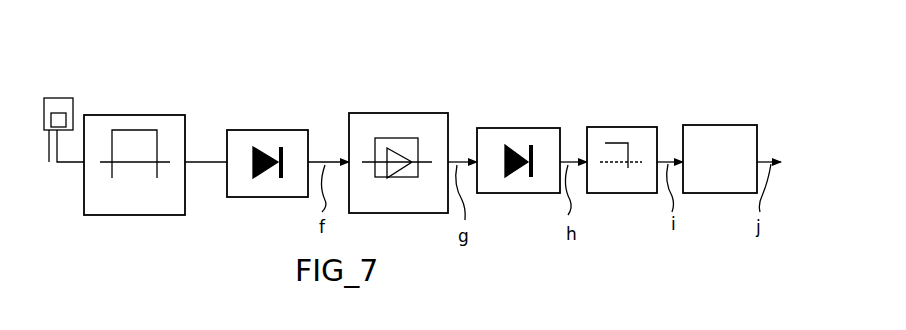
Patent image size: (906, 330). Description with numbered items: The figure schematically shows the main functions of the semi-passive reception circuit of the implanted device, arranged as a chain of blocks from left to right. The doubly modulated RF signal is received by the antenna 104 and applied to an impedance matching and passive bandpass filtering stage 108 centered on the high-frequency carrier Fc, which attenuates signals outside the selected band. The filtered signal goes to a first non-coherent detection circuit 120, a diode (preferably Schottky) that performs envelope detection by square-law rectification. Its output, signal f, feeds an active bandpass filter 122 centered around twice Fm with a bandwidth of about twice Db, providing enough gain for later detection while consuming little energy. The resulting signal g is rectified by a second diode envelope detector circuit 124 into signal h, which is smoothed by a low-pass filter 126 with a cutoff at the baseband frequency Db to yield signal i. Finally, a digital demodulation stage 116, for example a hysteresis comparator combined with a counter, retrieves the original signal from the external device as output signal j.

The antenna 104 is at (63, 98).
The impedance matching and passive bandpass filtering stage 108 is at (143, 115).
The first non-coherent detection circuit 120 is at (265, 130).
The active bandpass filter 122 is at (398, 113).
The second diode envelope detector circuit 124 is at (518, 128).
The low-pass filter 126 is at (622, 127).
The digital demodulation stage 116 is at (720, 125).